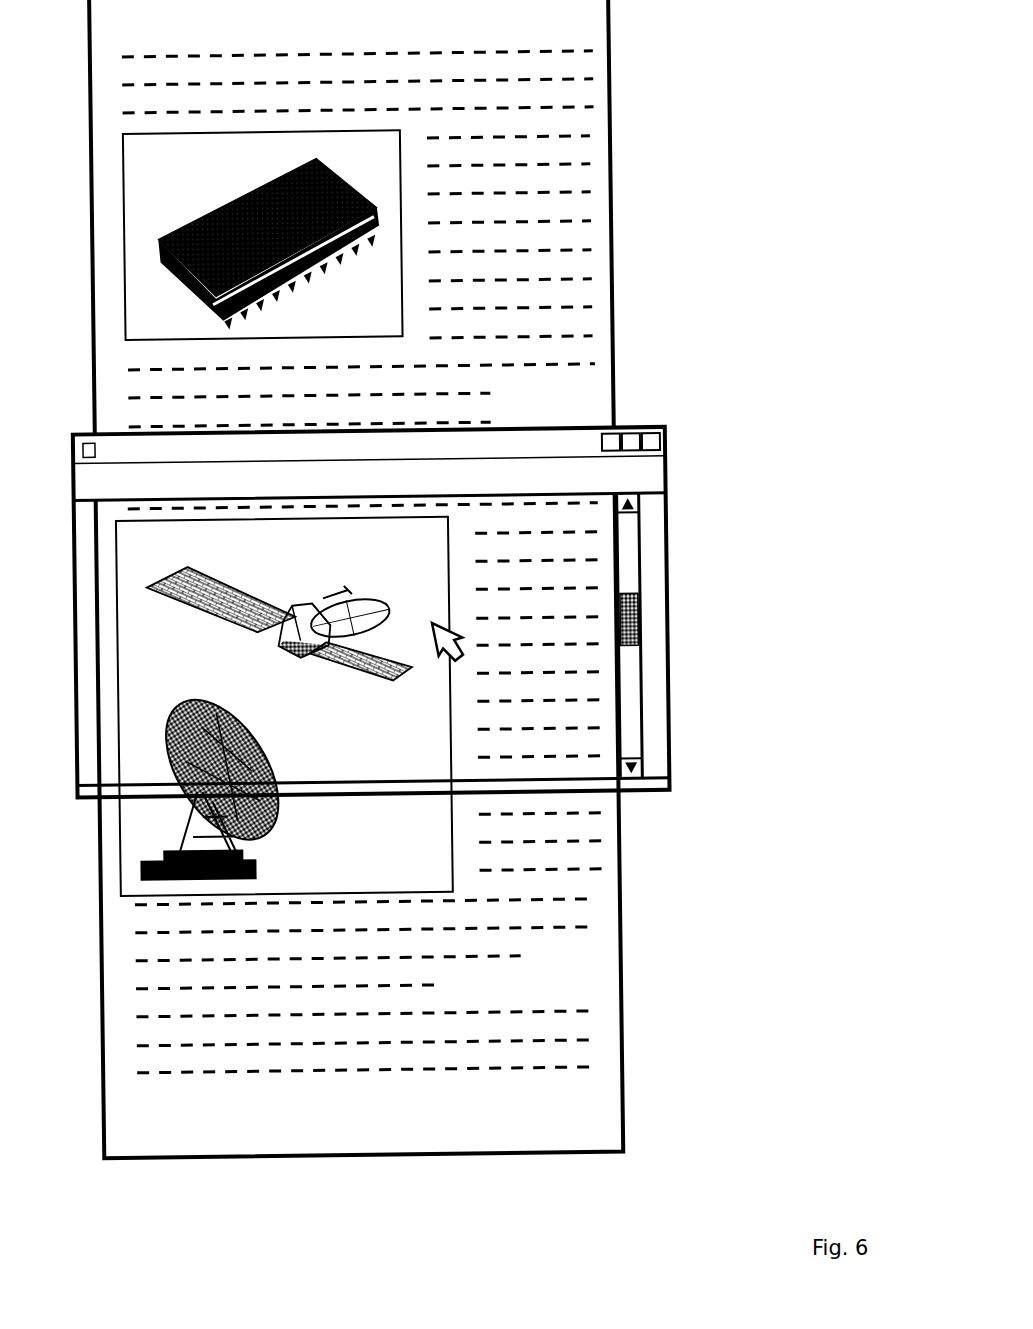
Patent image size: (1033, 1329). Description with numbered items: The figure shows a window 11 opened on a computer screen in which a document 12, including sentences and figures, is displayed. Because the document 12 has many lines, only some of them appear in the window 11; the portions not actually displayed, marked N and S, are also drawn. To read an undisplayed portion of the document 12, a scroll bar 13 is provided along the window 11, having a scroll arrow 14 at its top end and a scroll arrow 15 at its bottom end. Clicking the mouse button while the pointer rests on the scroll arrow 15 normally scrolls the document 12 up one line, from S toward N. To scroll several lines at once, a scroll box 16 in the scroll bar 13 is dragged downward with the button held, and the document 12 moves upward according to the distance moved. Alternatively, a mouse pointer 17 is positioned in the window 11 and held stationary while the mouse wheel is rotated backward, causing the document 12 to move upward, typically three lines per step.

The window 11 is at (97, 600).
The document 12 is at (597, 378).
The scroll bar 13 is at (642, 563).
The scroll arrow 14 is at (640, 497).
The scroll arrow 15 is at (640, 767).
The scroll box 16 is at (642, 611).
The mouse pointer 17 is at (470, 655).